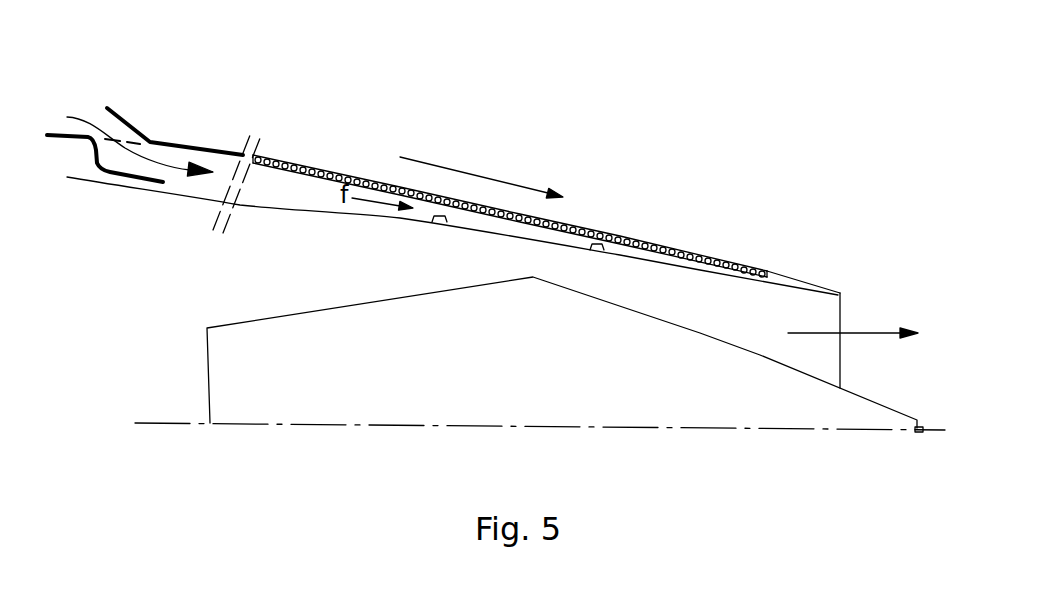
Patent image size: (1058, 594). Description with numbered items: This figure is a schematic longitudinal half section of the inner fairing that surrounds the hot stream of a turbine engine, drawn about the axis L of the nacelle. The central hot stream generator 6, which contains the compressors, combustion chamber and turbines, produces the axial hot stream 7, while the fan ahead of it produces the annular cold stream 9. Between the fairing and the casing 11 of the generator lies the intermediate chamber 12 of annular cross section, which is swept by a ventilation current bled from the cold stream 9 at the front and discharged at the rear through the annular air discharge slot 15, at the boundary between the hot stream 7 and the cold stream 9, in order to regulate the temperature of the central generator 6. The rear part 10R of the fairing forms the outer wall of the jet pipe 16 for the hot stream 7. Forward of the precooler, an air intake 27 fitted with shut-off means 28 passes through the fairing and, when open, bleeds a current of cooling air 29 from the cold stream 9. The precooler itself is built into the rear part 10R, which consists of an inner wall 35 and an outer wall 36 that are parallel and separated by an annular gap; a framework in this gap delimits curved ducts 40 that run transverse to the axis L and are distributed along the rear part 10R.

The central hot stream generator 6 is at (392, 390).
The hot stream 7 is at (853, 320).
The cold stream 9 is at (481, 168).
The rear part of the inner fairing 10R is at (688, 216).
The casing 11 is at (310, 217).
The intermediate chamber 12 is at (259, 181).
The annular air discharge slot 15 is at (773, 272).
The jet pipe 16 is at (823, 317).
The air intake 27 is at (121, 160).
The shut-off means 28 is at (138, 127).
The current of cooling air 29 is at (172, 162).
The inner wall 35 is at (640, 270).
The outer wall 36 is at (277, 140).
The curved ducts 40 is at (390, 183).
The axis of the nacelle L is at (540, 444).